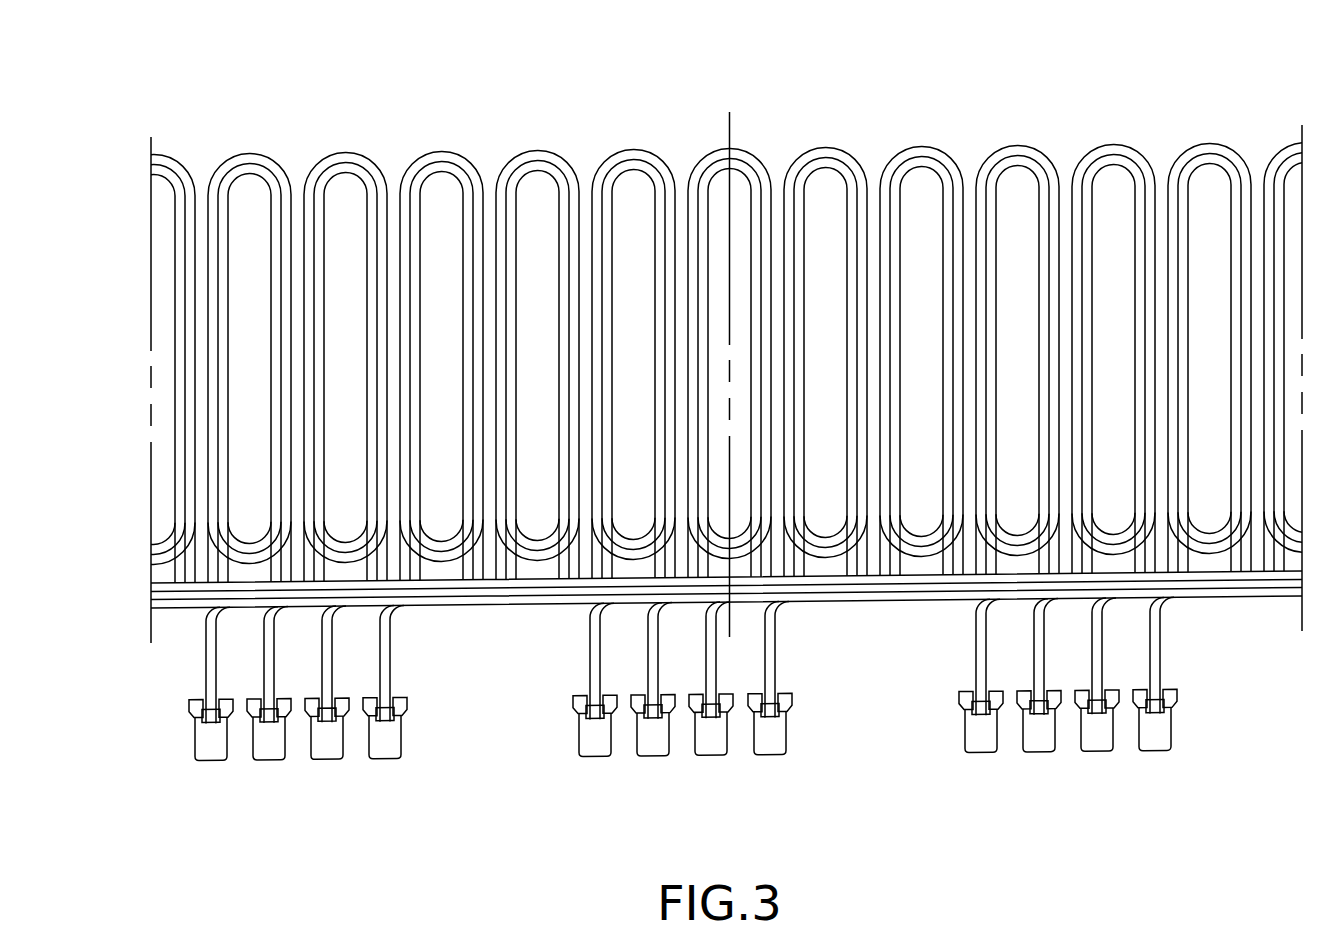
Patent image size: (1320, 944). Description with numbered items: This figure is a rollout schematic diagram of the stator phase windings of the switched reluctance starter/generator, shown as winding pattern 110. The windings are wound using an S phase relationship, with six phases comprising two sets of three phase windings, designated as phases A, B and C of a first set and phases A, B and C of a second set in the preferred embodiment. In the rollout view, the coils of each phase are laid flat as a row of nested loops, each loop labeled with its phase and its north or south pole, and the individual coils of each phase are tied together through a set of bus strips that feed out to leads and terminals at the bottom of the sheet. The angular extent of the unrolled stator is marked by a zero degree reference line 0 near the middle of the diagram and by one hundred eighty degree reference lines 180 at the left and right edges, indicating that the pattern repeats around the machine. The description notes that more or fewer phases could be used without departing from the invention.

The stator winding pattern 110 is at (1113, 146).
The 180 degree reference line 180 is at (726, 378).
The 0 degree reference line 0 is at (730, 389).